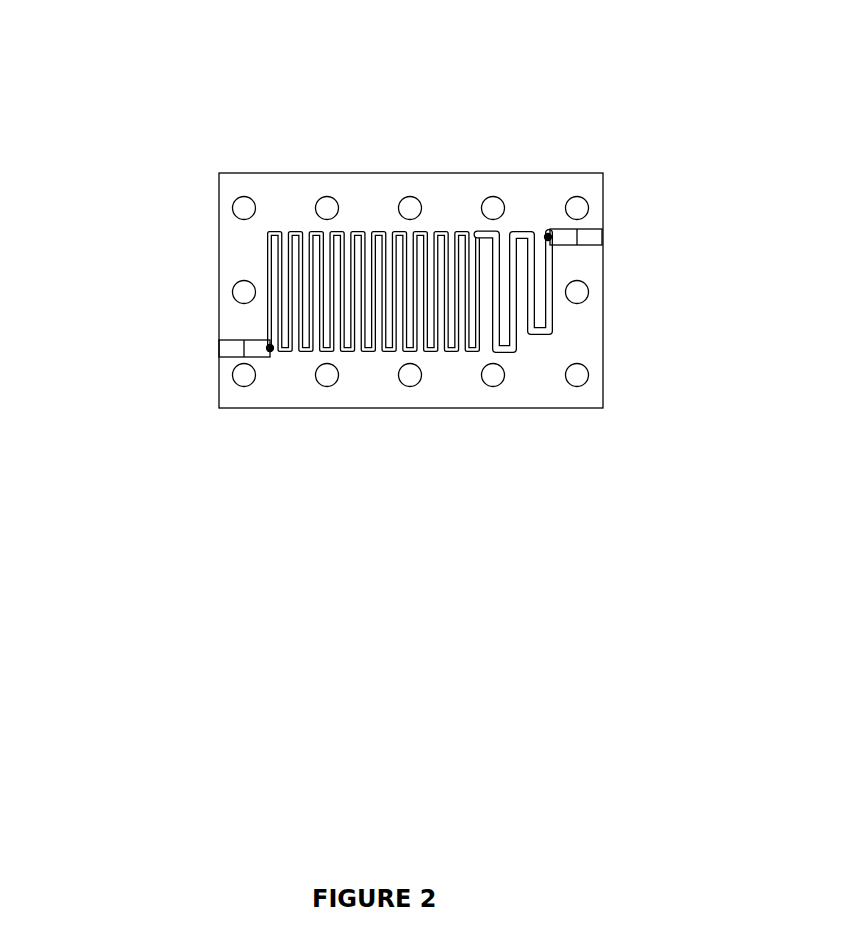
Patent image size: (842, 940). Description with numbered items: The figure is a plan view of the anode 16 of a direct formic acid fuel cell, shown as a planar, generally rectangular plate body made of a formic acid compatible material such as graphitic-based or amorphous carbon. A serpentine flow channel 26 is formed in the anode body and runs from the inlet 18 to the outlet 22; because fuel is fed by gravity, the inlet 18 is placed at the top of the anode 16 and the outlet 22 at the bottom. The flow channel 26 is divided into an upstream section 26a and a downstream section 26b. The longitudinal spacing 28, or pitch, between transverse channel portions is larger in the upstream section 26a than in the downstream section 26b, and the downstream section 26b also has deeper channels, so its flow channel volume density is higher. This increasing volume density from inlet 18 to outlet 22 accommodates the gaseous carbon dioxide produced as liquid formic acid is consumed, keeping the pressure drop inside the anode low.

The anode 16 is at (93, 67).
The inlet 18 is at (597, 237).
The outlet 22 is at (230, 348).
The serpentine flow channel 26 is at (411, 280).
The upstream section 26a is at (553, 230).
The downstream section 26b is at (467, 228).
The longitudinal spacing 28 is at (487, 295).